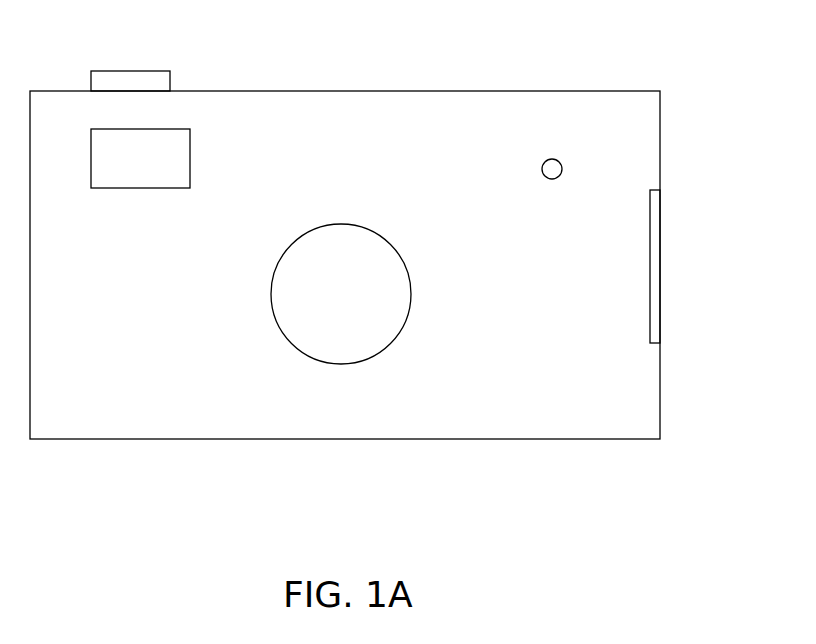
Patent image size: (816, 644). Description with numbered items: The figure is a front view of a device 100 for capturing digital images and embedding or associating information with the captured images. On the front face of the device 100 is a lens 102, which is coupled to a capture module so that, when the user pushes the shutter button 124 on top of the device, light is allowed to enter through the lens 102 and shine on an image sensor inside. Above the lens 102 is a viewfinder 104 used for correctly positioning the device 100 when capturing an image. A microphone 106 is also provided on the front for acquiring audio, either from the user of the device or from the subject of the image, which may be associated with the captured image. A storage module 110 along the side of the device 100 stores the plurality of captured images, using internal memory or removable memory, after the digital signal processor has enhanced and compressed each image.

The device 100 is at (446, 91).
The lens 102 is at (335, 364).
The viewfinder 104 is at (91, 160).
The microphone 106 is at (548, 179).
The storage module 110 is at (660, 247).
The shutter button 124 is at (170, 80).